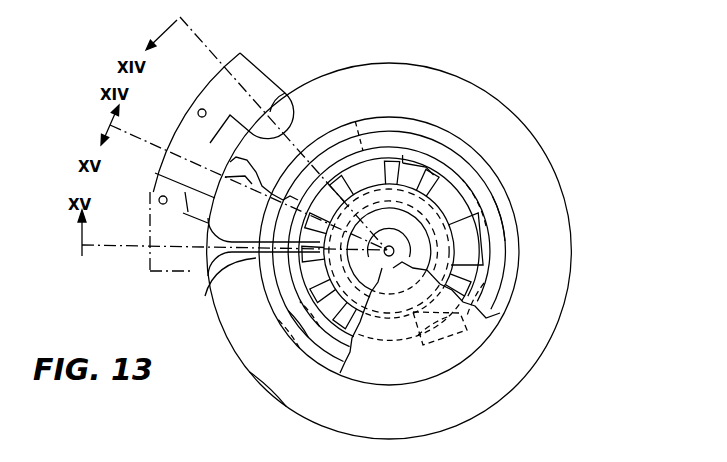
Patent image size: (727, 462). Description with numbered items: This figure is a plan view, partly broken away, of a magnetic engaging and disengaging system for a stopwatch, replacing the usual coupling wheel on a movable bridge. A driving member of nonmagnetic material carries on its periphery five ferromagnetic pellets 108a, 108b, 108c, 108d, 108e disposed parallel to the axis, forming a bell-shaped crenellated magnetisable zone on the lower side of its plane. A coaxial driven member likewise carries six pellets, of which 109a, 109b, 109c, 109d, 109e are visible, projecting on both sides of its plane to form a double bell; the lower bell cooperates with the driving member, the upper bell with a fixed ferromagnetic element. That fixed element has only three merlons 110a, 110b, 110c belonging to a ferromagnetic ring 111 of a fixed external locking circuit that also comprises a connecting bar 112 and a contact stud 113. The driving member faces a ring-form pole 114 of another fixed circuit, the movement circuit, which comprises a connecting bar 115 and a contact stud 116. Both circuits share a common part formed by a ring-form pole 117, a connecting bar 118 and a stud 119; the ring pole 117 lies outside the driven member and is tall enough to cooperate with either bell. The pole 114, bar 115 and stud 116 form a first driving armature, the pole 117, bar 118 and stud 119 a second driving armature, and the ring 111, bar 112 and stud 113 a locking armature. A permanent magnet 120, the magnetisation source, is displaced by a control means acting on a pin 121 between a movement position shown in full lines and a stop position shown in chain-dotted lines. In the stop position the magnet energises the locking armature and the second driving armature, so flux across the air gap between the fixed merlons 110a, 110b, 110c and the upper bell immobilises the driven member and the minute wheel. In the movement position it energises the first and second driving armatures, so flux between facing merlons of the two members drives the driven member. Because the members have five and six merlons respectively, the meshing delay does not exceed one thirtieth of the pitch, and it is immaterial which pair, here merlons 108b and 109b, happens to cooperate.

The ferromagnetic pellet 108a is at (288, 180).
The ferromagnetic pellet 108b is at (300, 351).
The ferromagnetic pellet 108c is at (467, 280).
The ferromagnetic pellet 108d is at (483, 170).
The ferromagnetic pellet 108e is at (358, 180).
The ferromagnetic pellet 109a is at (300, 292).
The ferromagnetic pellet 109b is at (320, 362).
The ferromagnetic pellet 109c is at (460, 313).
The ferromagnetic pellet 109d is at (480, 230).
The ferromagnetic pellet 109e is at (408, 152).
The merlon 110a is at (413, 312).
The merlon 110b is at (483, 250).
The merlon 110c is at (420, 178).
The ferromagnetic ring 111 is at (265, 311).
The connecting bar 112 is at (245, 286).
The contact stud 113 is at (193, 260).
The pole 114 is at (285, 327).
The connecting bar 115 is at (318, 128).
The contact stud 116 is at (296, 84).
The pole 117 is at (260, 232).
The connecting bar 118 is at (230, 162).
The stud 119 is at (225, 177).
The permanent magnet 120 is at (238, 58).
The pin 121 is at (198, 112).